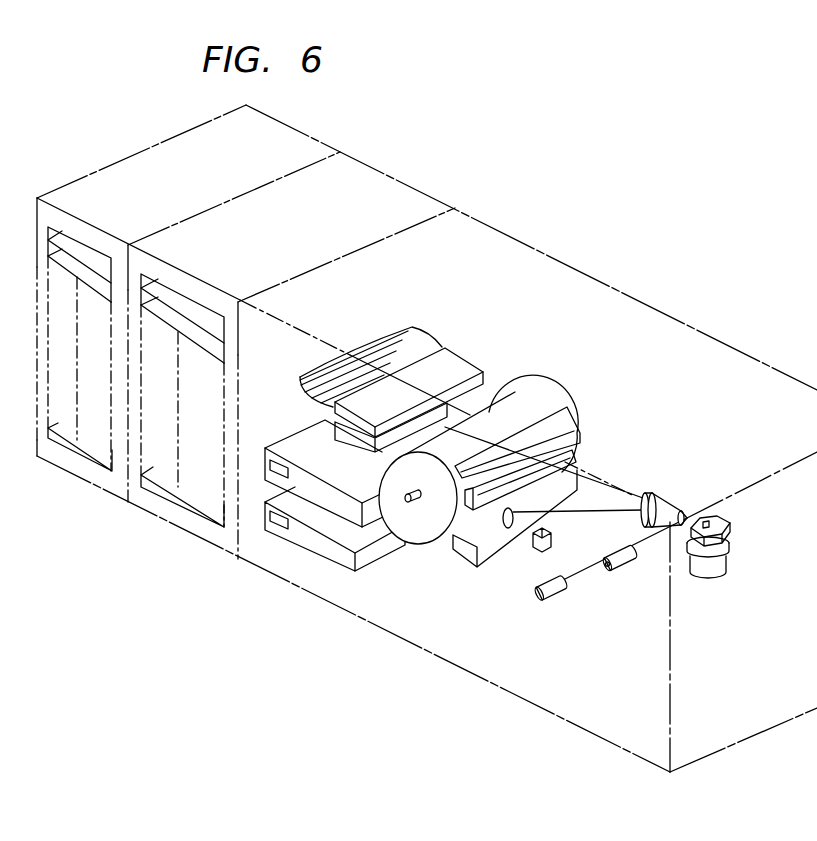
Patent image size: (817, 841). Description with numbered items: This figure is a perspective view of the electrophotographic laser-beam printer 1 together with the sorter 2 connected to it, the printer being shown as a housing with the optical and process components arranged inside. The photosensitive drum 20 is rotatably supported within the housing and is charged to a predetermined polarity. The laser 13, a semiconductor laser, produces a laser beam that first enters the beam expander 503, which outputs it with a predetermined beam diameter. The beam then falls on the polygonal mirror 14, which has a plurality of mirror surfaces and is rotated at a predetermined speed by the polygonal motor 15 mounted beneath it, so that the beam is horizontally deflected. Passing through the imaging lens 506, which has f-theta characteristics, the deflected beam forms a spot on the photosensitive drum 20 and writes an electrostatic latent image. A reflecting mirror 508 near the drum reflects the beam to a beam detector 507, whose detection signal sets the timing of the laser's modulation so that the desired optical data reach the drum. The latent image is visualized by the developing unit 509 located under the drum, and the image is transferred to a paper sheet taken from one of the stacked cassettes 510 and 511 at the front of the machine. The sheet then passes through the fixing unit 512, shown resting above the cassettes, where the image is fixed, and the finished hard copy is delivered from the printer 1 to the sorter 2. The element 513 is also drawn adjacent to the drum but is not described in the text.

The printer 1 is at (427, 435).
The sorter 2 is at (310, 127).
The photosensitive drum 20 is at (540, 400).
The developing unit rails 513 is at (565, 410).
The fixing unit 512 is at (340, 433).
The cassette 510 is at (308, 493).
The cassette 511 is at (338, 553).
The developing unit 509 is at (442, 560).
The reflecting mirror 508 is at (510, 528).
The beam detector 507 is at (552, 537).
The imaging lens 506 is at (667, 503).
The polygonal mirror 14 is at (720, 521).
The polygonal motor 15 is at (729, 553).
The beam expander 503 is at (623, 563).
The laser 13 is at (555, 598).